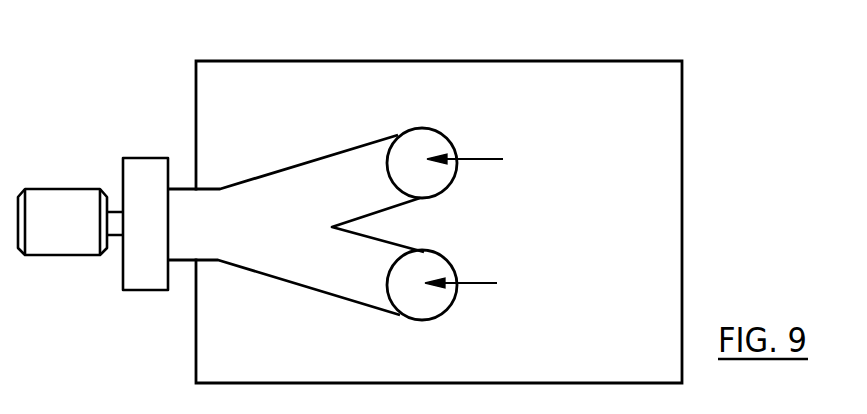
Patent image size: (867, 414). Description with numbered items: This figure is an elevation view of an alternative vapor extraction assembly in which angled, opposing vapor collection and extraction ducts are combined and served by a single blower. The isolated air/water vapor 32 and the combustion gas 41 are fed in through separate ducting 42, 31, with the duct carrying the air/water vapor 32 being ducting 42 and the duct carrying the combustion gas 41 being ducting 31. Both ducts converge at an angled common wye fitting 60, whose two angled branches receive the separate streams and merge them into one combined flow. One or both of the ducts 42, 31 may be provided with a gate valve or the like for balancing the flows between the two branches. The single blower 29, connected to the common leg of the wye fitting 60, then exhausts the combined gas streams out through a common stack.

The single blower 29 is at (122, 263).
The angled common wye fitting 60 is at (235, 180).
The ducting 31 is at (411, 128).
The isolated air/water vapor 32 is at (483, 283).
The combustion gas 41 is at (480, 158).
The ducting 42 is at (425, 320).